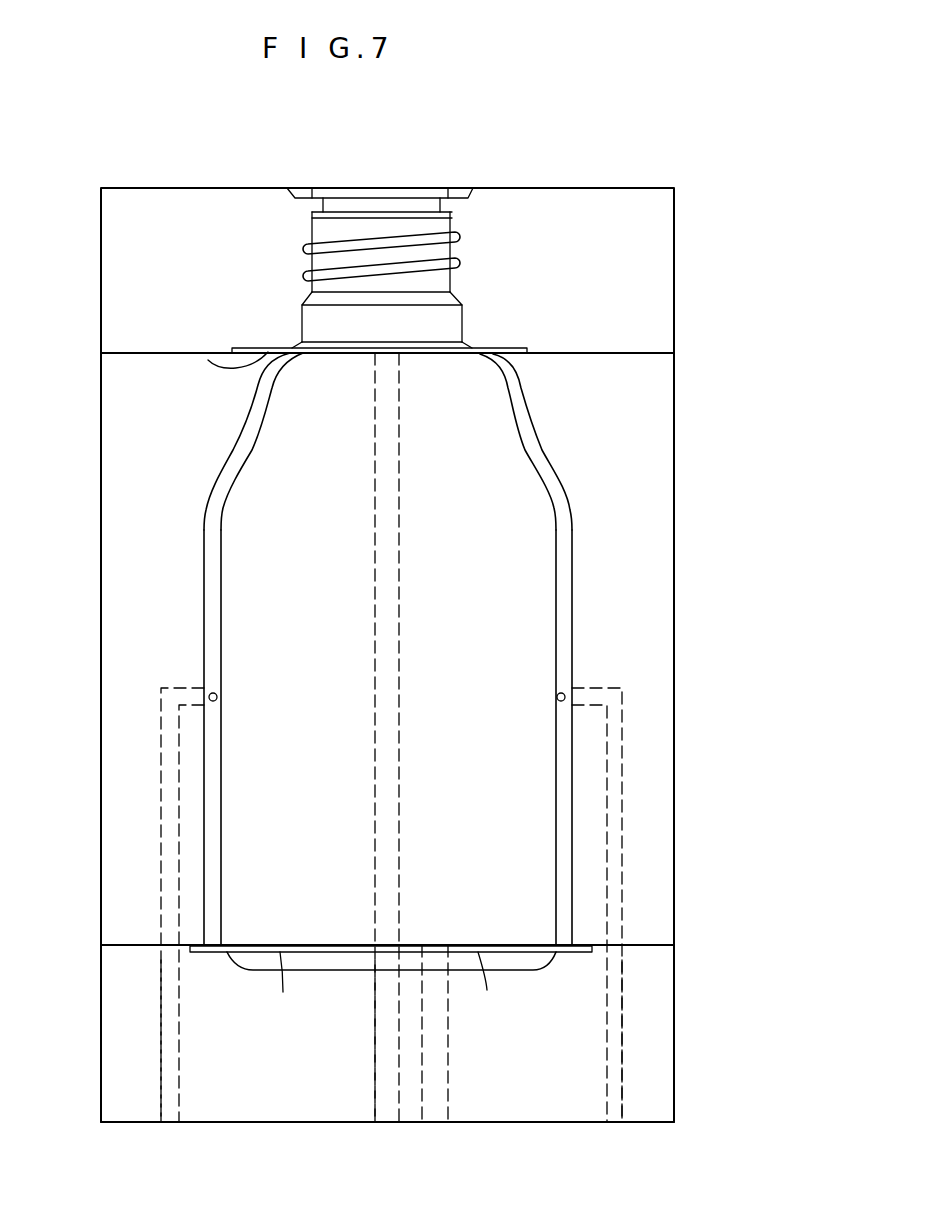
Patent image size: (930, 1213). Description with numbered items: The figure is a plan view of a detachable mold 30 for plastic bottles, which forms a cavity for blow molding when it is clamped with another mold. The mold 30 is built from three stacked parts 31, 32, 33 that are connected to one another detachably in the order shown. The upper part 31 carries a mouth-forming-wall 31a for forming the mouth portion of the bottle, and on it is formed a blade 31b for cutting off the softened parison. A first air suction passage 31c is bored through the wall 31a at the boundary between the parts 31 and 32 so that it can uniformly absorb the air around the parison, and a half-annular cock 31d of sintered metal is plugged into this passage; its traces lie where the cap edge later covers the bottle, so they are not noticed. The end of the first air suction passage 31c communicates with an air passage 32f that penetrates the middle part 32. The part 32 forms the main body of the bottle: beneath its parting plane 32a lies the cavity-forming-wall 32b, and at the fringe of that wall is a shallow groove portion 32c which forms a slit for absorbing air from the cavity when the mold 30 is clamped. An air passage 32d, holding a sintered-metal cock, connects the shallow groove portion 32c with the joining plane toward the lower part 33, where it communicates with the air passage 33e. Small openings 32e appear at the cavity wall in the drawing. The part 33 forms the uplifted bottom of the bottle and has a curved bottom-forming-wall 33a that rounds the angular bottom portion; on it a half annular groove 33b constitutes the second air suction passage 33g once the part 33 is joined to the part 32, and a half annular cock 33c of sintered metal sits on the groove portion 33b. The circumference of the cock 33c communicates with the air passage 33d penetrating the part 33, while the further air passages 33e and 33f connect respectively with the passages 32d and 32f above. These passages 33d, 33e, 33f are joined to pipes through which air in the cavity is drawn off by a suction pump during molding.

The mold 30 is at (578, 182).
The part 31 is at (663, 238).
The mouth-forming-wall 31a is at (397, 252).
The blade 31b is at (460, 188).
The first air suction passage 31c is at (248, 350).
The half-annular cock 31d is at (208, 360).
The part 32 is at (673, 420).
The parting plane 32a is at (655, 553).
The cavity-forming-wall 32b is at (523, 457).
The shallow groove portion 32c is at (252, 448).
The air passage 32d is at (158, 745).
The vent hole 32e is at (218, 696).
The air passage 32f is at (400, 413).
The part 33 is at (677, 1008).
The curved bottom-forming-wall 33a is at (547, 963).
The half annular groove 33b is at (390, 992).
The half annular cock 33c is at (218, 943).
The air passage 33d is at (450, 1062).
The air passage 33e is at (160, 997).
The air passage 33f is at (375, 1047).
The second air suction passage 33g is at (582, 955).